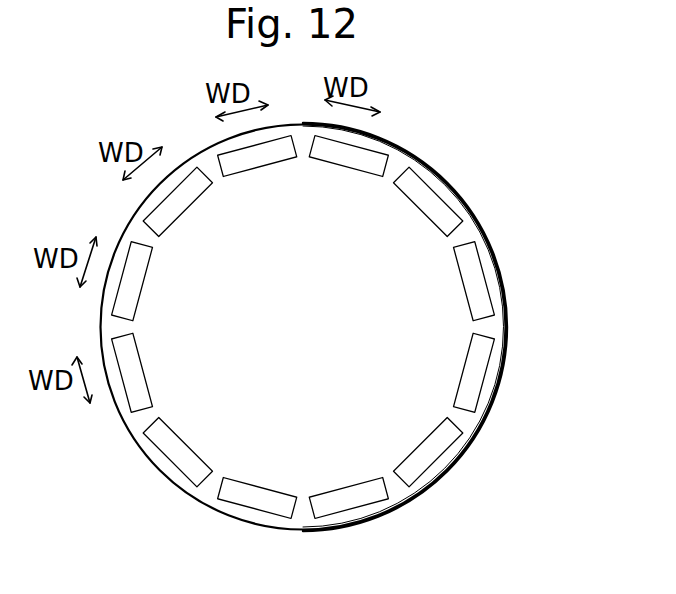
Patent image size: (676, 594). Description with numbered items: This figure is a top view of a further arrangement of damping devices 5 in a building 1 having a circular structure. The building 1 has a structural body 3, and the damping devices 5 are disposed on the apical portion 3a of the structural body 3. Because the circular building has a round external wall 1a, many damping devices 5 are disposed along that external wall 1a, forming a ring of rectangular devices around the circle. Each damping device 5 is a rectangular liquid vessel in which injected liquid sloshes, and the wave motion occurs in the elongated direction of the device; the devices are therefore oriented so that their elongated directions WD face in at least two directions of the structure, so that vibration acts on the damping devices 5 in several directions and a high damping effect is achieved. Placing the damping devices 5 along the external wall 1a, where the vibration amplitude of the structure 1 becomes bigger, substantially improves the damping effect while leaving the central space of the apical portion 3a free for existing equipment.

The multistory building 1 is at (478, 106).
The external wall 1a is at (507, 327).
The structural body 3 is at (411, 124).
The apical portion 3a is at (475, 230).
The damping device 5 is at (433, 192).